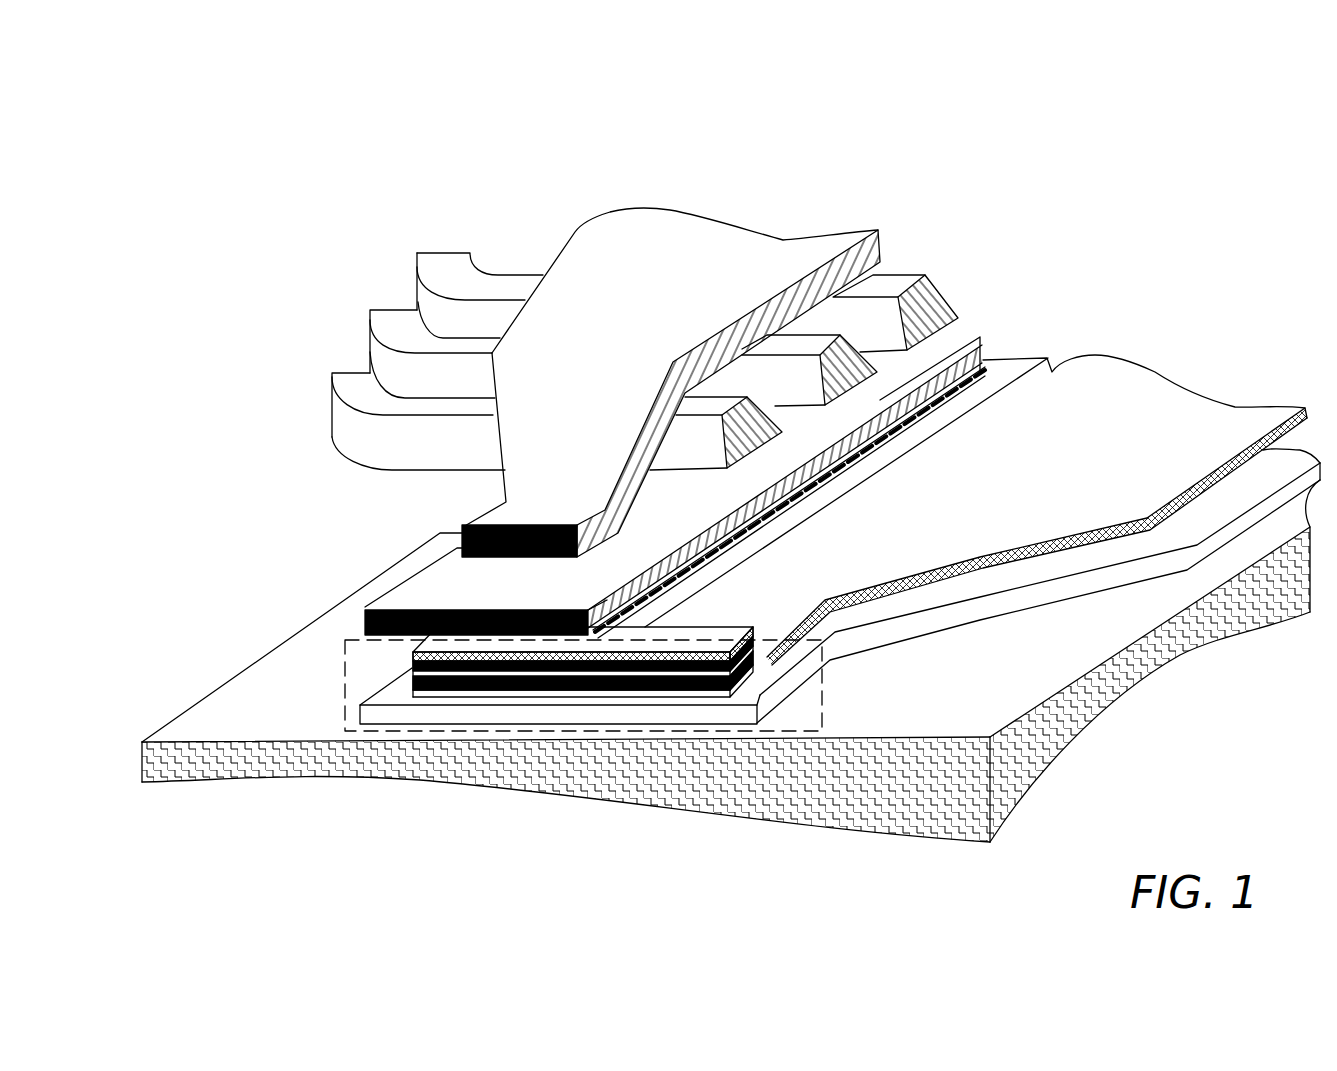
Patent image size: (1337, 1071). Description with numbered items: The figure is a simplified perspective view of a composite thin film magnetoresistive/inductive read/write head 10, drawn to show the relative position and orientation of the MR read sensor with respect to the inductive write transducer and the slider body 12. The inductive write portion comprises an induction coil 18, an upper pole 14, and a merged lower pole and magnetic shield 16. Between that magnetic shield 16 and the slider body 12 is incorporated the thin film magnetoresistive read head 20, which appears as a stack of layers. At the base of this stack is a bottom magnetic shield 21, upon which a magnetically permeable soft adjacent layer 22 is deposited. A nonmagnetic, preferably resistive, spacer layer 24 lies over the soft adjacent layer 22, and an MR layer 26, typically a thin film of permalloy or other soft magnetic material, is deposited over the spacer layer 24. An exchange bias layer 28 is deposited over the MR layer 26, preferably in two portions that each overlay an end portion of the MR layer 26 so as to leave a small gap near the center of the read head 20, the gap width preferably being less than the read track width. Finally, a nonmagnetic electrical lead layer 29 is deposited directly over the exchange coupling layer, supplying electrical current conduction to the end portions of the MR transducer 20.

The read/write head 10 is at (588, 104).
The slider body 12 is at (1180, 663).
The upper pole 14 is at (880, 228).
The merged lower pole and magnetic shield 16 is at (975, 335).
The induction coil 18 is at (445, 250).
The magnetoresistive read head 20 is at (822, 680).
The bottom magnetic shield 21 is at (378, 712).
The soft adjacent layer 22 is at (465, 693).
The spacer layer 24 is at (413, 678).
The MR layer 26 is at (413, 666).
The exchange bias layer 28 is at (413, 655).
The nonmagnetic electrical lead layer 29 is at (800, 598).